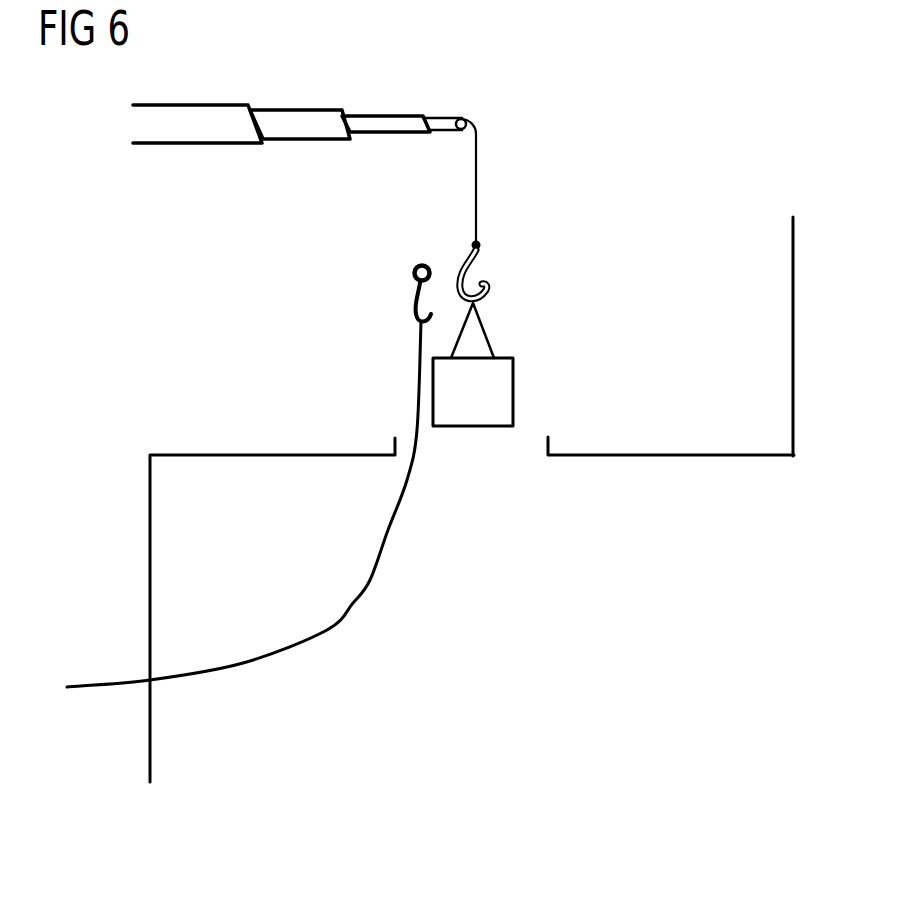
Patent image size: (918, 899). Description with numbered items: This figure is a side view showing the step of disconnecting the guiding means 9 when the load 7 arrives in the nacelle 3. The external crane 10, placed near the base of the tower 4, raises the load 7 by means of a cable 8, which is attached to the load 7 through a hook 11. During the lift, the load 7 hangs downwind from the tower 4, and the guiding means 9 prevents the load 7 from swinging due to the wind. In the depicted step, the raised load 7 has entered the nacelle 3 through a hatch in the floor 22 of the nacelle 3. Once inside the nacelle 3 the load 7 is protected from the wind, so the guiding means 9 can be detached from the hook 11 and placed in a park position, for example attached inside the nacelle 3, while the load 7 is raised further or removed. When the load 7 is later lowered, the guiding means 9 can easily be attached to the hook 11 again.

The nacelle 3 is at (794, 290).
The tower 4 is at (150, 558).
The load 7 is at (514, 388).
The cable 8 is at (477, 177).
The guiding means 9 is at (378, 594).
The external crane 10 is at (176, 146).
The hook 11 is at (479, 268).
The floor 22 is at (716, 457).